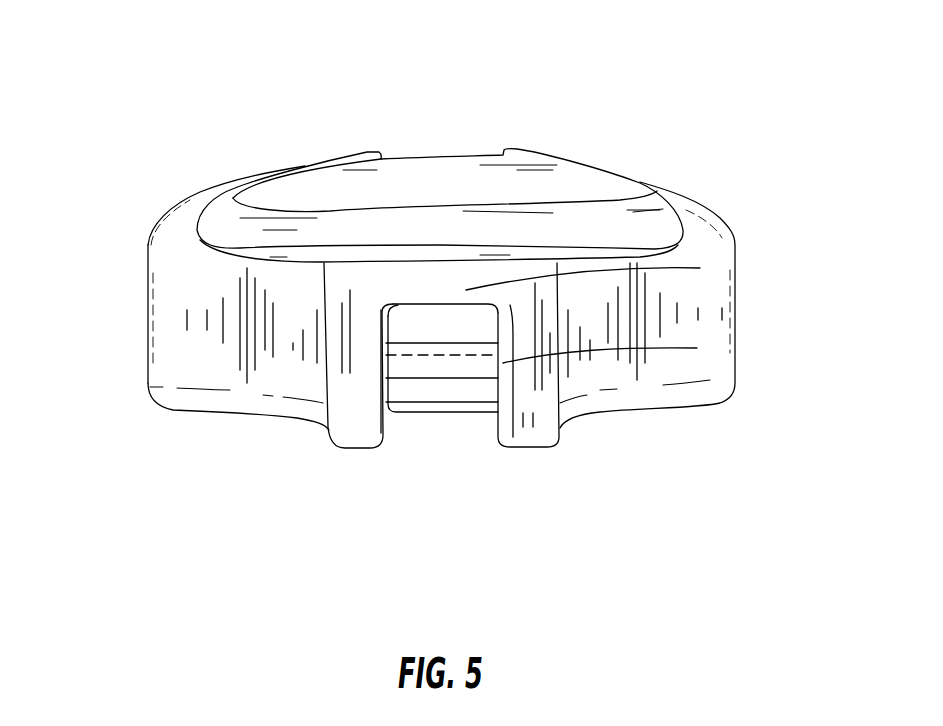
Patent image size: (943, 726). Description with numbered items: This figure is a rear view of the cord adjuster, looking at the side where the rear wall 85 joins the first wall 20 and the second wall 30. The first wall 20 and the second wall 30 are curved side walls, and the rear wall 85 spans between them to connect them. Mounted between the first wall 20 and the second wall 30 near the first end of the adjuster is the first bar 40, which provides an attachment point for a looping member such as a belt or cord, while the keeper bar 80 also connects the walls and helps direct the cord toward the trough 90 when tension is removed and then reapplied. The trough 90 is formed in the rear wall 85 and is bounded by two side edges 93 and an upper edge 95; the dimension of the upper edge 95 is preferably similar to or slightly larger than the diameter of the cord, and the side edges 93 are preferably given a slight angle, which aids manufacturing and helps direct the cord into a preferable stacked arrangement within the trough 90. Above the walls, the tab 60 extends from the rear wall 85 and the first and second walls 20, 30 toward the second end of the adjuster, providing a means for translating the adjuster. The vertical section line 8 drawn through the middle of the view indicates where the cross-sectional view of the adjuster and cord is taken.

The section line 8— 8 is at (441, 617).
The first wall 20 is at (720, 258).
The second wall 30 is at (170, 302).
The first bar 40 is at (398, 414).
The tab 60 is at (287, 193).
The keeper bar 80 is at (485, 392).
The rear wall 85 is at (700, 268).
The trough 90 is at (493, 325).
The side edges 93 is at (697, 348).
The upper edge 95 is at (413, 305).